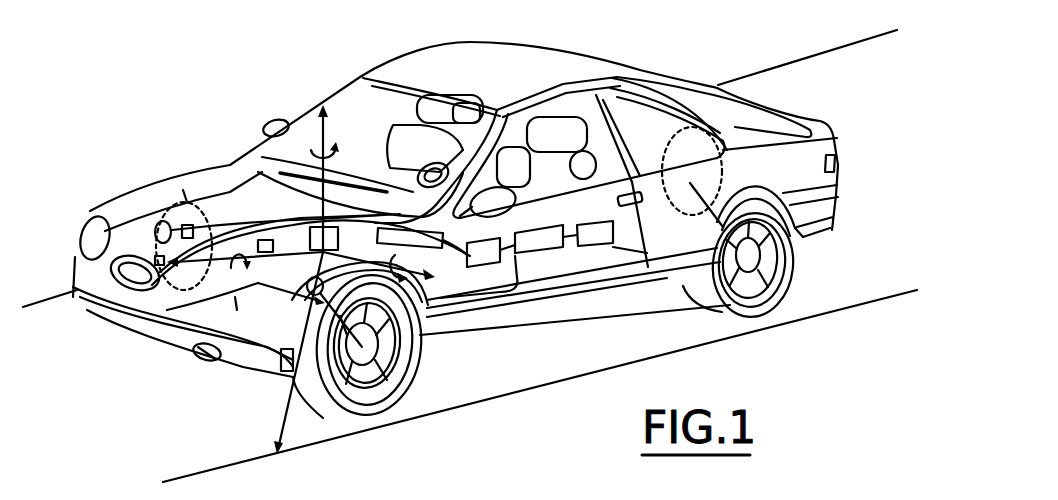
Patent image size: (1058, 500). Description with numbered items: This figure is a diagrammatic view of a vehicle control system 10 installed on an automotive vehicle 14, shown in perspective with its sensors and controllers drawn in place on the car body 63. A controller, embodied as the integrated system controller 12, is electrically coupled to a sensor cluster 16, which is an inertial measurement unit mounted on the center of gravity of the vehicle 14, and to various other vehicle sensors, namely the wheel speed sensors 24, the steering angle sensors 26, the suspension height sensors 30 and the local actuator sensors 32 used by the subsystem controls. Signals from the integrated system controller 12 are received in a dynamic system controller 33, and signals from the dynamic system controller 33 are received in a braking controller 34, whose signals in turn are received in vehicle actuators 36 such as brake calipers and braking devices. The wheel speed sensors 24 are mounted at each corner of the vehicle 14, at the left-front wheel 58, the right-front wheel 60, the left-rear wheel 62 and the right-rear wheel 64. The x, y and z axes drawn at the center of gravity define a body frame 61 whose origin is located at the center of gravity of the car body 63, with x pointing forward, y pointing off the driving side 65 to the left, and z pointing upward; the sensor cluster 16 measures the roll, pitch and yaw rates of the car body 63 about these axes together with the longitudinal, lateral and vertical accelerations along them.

The vehicle control system 10 is at (237, 74).
The integrated system controller 12 is at (380, 232).
The automotive vehicle 14 is at (455, 230).
The sensor cluster 16 is at (322, 251).
The wheel speed sensors 24 is at (156, 227).
The steering angle sensors 26 is at (418, 186).
The suspension height sensors 30 is at (185, 228).
The local actuator sensors 32 is at (263, 240).
The dynamic system controller 33 is at (487, 266).
The braking controller 34 is at (548, 250).
The vehicle actuators 36 is at (596, 203).
The left-front wheel 58 is at (373, 415).
The right-front wheel 60 is at (182, 178).
The body frame 61 is at (833, 207).
The left-rear wheel 62 is at (792, 275).
The car body 63 is at (673, 80).
The right-rear wheel 64 is at (720, 122).
The driving side 65 is at (608, 292).